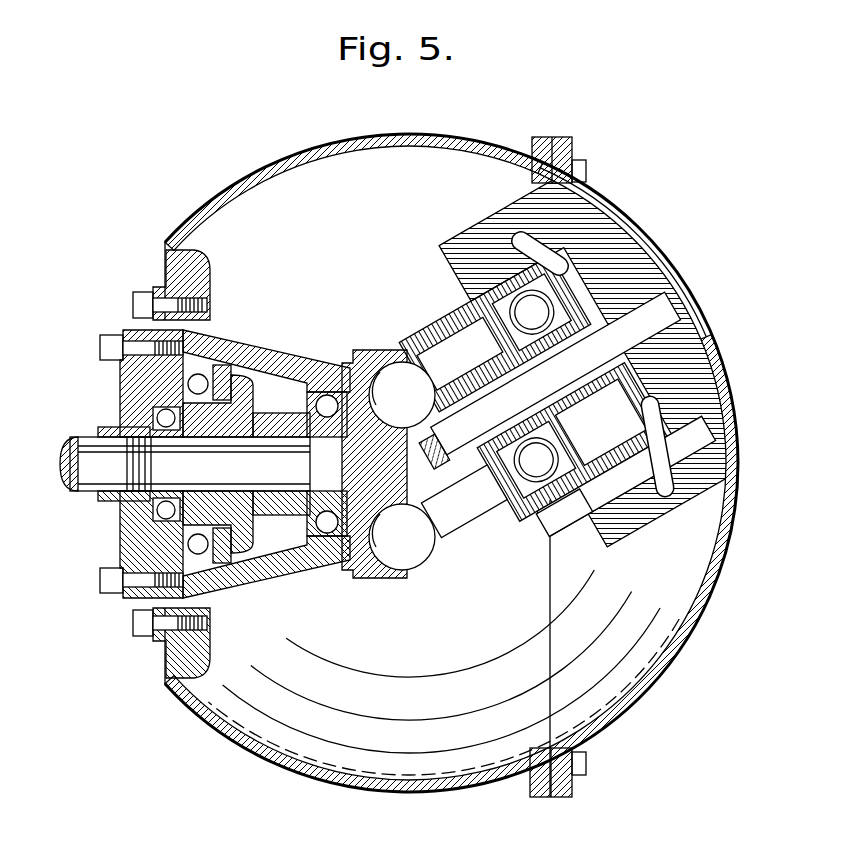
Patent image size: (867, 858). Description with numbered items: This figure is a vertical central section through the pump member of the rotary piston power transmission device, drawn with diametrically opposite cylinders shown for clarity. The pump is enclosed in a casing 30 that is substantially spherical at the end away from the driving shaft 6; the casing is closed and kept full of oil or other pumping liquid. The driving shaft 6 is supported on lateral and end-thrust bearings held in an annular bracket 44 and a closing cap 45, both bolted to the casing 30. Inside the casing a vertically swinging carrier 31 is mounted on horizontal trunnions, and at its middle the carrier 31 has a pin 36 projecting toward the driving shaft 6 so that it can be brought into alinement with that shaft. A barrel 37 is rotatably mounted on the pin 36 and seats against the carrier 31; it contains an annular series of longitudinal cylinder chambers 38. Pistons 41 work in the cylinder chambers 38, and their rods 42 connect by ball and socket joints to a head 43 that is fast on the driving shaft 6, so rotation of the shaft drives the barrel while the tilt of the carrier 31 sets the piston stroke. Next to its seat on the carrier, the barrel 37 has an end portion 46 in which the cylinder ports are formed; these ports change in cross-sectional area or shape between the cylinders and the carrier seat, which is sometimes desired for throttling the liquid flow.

The driving shaft 6 is at (78, 433).
The casing 30 is at (233, 208).
The carrier 31 is at (688, 491).
The pin 36 is at (549, 380).
The barrel 37 is at (567, 512).
The cylinder chambers 38 is at (466, 312).
The pistons 41 is at (476, 236).
The piston rods 42 is at (427, 340).
The head 43 is at (378, 582).
The annular bracket 44 is at (263, 578).
The closing cap 45 is at (120, 542).
The end portion of the barrel 46 is at (656, 495).